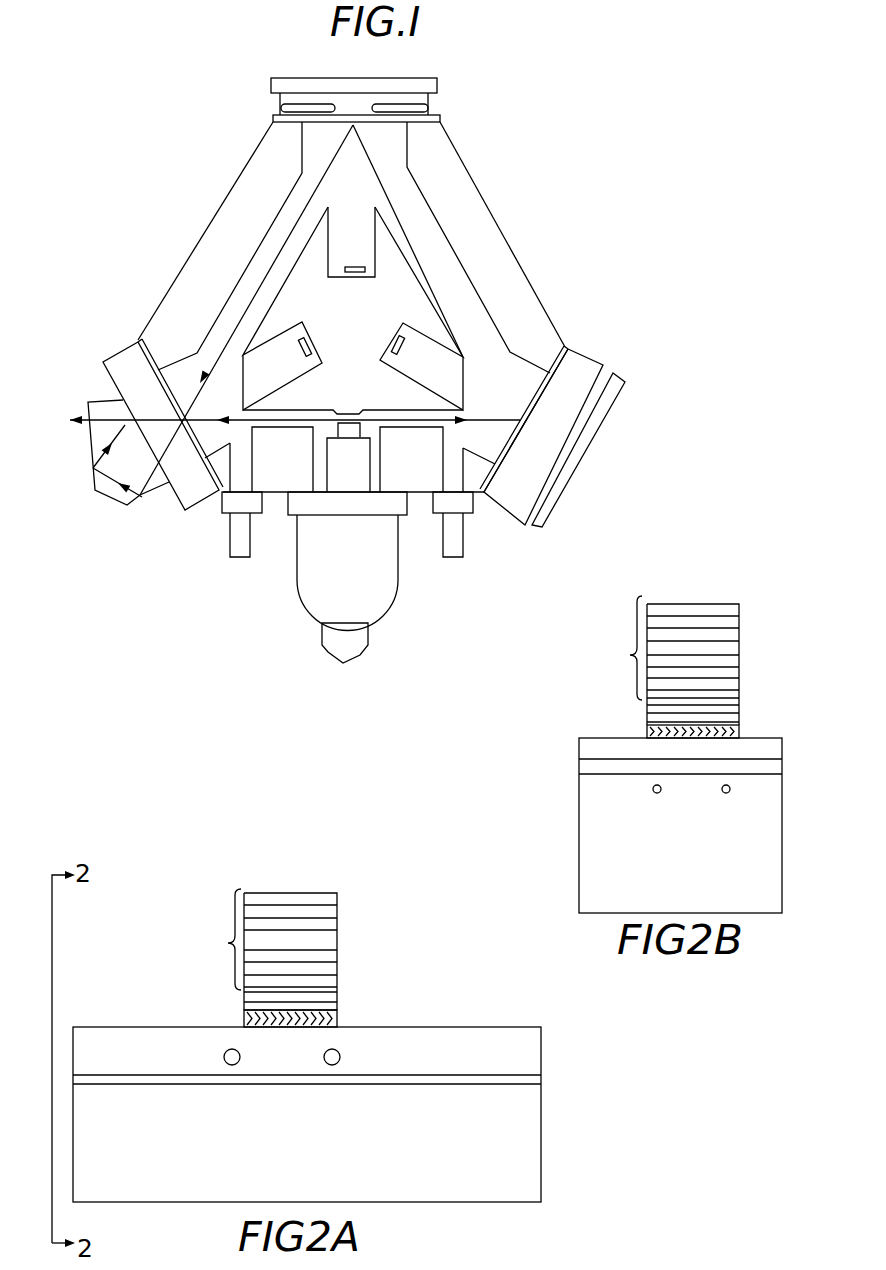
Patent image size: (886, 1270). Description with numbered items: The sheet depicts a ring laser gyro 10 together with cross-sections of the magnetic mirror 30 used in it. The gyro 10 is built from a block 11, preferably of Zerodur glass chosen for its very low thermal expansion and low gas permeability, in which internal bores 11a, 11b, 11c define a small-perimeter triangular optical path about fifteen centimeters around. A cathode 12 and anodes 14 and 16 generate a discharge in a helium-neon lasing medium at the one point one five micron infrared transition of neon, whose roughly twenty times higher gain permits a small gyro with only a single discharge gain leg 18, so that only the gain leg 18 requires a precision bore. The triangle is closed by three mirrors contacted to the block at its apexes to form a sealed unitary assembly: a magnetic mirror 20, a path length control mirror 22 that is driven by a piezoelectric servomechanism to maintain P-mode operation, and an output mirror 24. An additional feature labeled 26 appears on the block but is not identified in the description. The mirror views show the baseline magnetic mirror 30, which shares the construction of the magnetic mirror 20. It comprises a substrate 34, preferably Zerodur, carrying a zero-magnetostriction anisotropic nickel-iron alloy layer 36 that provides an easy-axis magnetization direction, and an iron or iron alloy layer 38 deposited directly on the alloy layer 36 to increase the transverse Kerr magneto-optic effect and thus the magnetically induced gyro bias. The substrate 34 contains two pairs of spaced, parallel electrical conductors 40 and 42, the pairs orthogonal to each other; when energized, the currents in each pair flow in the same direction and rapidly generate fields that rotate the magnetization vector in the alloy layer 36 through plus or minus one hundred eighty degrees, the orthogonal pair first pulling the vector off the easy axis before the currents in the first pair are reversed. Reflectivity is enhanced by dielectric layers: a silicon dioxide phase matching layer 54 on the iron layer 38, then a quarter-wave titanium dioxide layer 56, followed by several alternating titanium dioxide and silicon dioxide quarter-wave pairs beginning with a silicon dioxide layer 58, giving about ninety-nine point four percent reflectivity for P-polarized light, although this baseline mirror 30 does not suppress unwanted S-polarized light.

In FIG. 1, the ring laser gyro 10 is at (478, 116).
In FIG. 1, the block 11 is at (497, 229).
In FIG. 1, the internal bore 11a is at (248, 238).
In FIG. 1, the internal bore 11b is at (490, 241).
In FIG. 1, the internal bore 11c is at (278, 406).
In FIG. 1, the cathode 12 is at (310, 603).
In FIG. 1, the anode 14 is at (240, 558).
In FIG. 1, the anode 16 is at (456, 557).
In FIG. 1, the gain leg 18 is at (383, 410).
In FIG. 1, the magnetic mirror 20 is at (290, 78).
In FIG. 1, the path length control mirror 22 is at (622, 378).
In FIG. 1, the output mirror 24 is at (116, 364).
In FIG. 1, the block face 26 is at (245, 176).
In FIG. 2A, the magnetic mirror 30 is at (183, 1206).
In FIG. 2A, the substrate 34 is at (178, 1177).
In FIG. 2B, the substrate 34 is at (696, 874).
In FIG. 2A, the anisotropic magnetic alloy layer 36 is at (338, 1023).
In FIG. 2B, the anisotropic magnetic alloy layer 36 is at (739, 736).
In FIG. 2A, the iron or iron alloy layer 38 is at (338, 1012).
In FIG. 2B, the iron or iron alloy layer 38 is at (739, 722).
In FIG. 2A, the electrical conductors 40 is at (324, 1059).
In FIG. 2B, the electrical conductors 40 is at (621, 777).
In FIG. 2A, the electrical conductors 42 is at (408, 1086).
In FIG. 2B, the electrical conductors 42 is at (722, 791).
In FIG. 2A, the phase matching layer 54 is at (243, 1006).
In FIG. 2B, the phase matching layer 54 is at (647, 722).
In FIG. 2A, the TiO2 layer 56 is at (338, 993).
In FIG. 2B, the TiO2 layer 56 is at (739, 705).
In FIG. 2A, the SiO2 layer 58 is at (337, 986).
In FIG. 2B, the SiO2 layer 58 is at (739, 695).